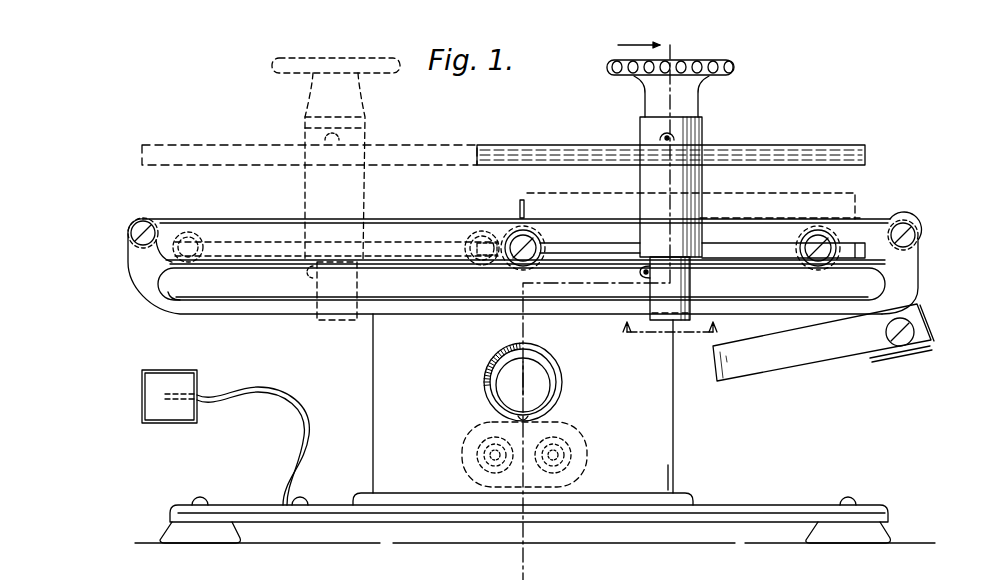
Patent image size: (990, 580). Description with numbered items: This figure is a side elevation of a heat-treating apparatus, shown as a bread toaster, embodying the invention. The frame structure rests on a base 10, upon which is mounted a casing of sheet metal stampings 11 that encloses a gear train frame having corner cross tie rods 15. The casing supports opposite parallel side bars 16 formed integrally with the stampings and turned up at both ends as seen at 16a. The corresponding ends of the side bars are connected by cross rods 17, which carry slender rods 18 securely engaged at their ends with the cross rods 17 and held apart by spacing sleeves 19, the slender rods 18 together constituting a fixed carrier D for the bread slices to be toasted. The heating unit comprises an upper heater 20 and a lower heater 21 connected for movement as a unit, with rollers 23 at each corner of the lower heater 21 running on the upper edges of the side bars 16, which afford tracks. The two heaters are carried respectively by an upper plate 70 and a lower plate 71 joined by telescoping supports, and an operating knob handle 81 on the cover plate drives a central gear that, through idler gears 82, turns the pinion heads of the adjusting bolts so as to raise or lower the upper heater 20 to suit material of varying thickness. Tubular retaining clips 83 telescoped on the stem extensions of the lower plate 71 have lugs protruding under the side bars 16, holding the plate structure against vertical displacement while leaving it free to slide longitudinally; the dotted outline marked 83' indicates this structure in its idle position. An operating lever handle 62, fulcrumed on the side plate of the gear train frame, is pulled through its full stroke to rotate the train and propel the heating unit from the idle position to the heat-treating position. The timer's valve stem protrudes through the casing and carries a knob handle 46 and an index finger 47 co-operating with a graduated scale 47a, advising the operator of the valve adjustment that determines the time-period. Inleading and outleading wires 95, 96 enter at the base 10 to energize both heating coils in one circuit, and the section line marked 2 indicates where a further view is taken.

The section line 2- 2 is at (566, 308).
The base 10 is at (240, 505).
The sheet metal stampings 11 is at (373, 350).
The corner cross tie rods 15 is at (670, 342).
The side bars 16 is at (178, 305).
The turned-up ends of side bars 16a is at (918, 246).
The cross rods 17 is at (138, 218).
The slender rods 18 is at (252, 220).
The spacing sleeves 19 is at (132, 243).
The upper heater 20 is at (540, 168).
The lower heater 21 is at (578, 250).
The rollers 23 is at (541, 234).
The knob handle 46 is at (546, 378).
The index finger 47 is at (530, 352).
The graduated scale 47a is at (490, 358).
The operating lever handle 62 is at (823, 342).
The upper plate 70 is at (744, 146).
The lower plate 71 is at (736, 260).
The operating knob handle 81 is at (700, 96).
The idler gear 82 is at (641, 278).
The tubular retaining clips 83 is at (693, 264).
The carriage block (phantom position) 83' is at (336, 204).
The inleading wire 95 is at (574, 450).
The outleading wire 96 is at (466, 450).
The fixed carrier D is at (494, 218).